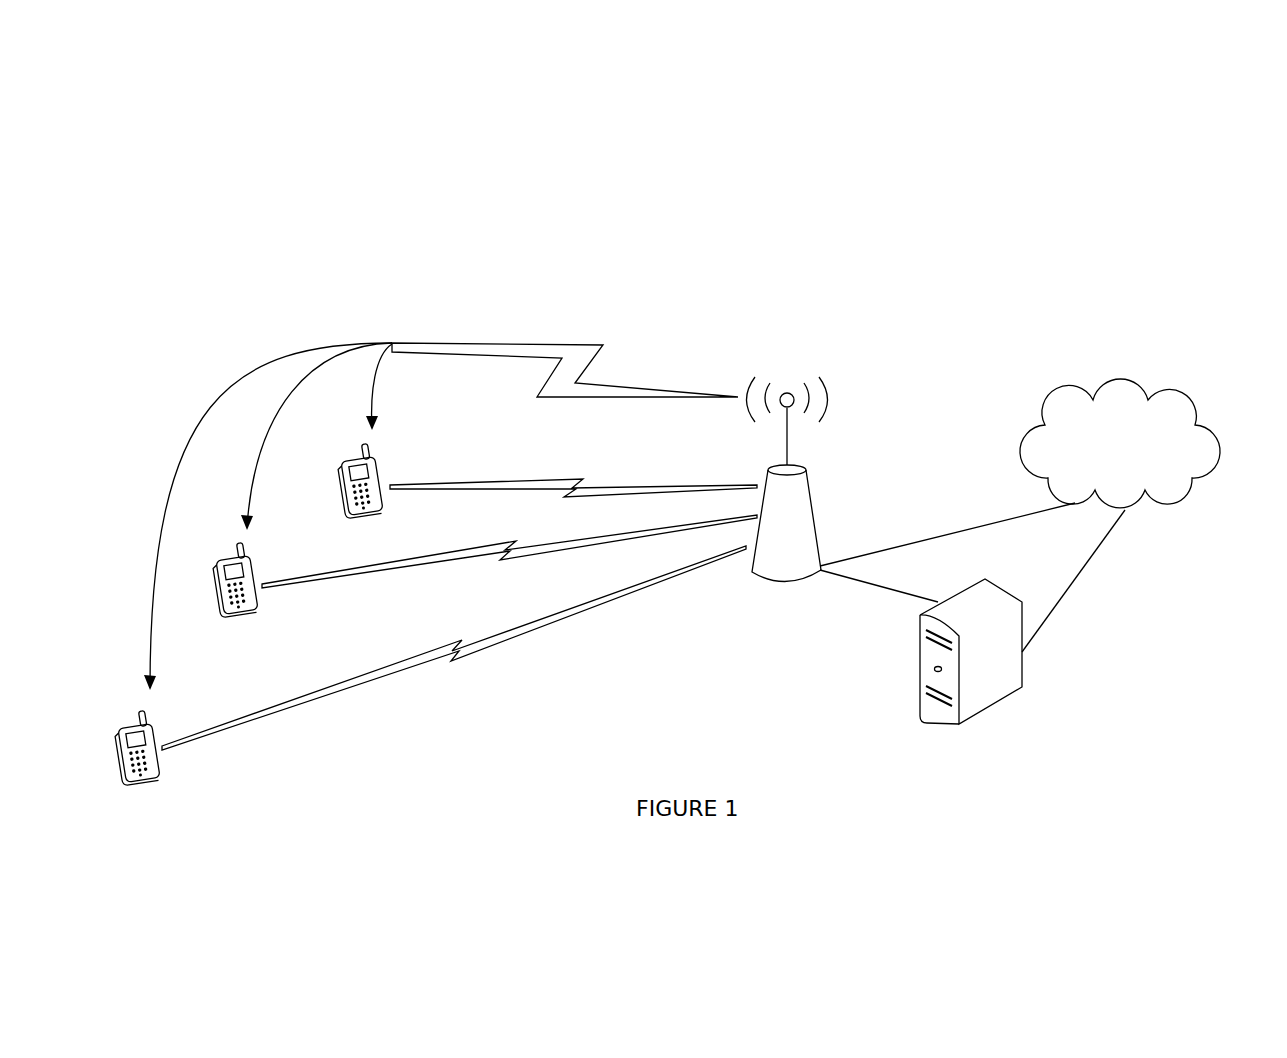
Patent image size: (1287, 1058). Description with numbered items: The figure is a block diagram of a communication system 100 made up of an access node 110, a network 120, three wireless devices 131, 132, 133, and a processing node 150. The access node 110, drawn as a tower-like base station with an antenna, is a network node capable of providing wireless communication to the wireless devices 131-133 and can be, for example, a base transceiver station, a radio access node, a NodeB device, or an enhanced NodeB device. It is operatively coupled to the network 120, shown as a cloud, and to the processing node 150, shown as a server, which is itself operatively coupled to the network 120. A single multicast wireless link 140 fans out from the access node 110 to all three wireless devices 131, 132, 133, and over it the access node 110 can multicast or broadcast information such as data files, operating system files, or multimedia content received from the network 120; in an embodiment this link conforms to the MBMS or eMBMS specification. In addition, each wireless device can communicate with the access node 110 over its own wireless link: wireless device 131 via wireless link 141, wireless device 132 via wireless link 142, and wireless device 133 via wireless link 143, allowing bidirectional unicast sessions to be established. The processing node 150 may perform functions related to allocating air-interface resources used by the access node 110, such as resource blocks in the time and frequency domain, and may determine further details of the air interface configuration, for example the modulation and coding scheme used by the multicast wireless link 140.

The communication system 100 is at (172, 91).
The access node 110 is at (780, 582).
The network 120 is at (1104, 468).
The wireless device 131 is at (355, 510).
The wireless device 132 is at (240, 612).
The wireless device 133 is at (140, 779).
The multicast wireless link 140 is at (567, 338).
The wireless link 141 is at (566, 478).
The wireless link 142 is at (566, 545).
The wireless link 143 is at (532, 628).
The processing node 150 is at (948, 718).